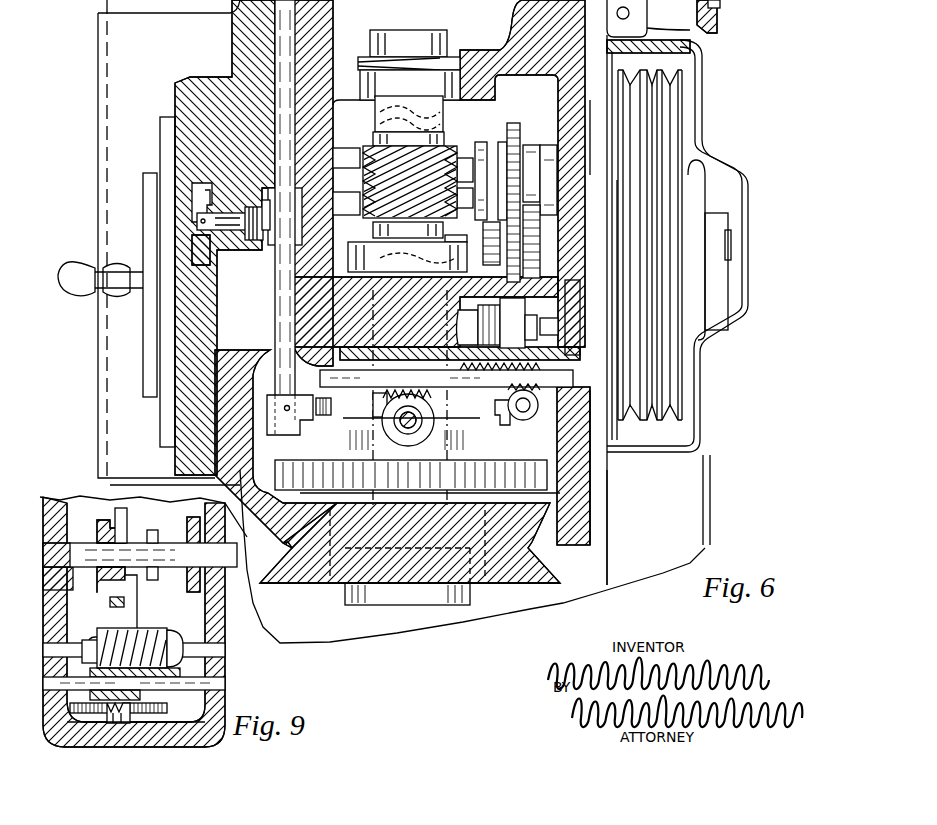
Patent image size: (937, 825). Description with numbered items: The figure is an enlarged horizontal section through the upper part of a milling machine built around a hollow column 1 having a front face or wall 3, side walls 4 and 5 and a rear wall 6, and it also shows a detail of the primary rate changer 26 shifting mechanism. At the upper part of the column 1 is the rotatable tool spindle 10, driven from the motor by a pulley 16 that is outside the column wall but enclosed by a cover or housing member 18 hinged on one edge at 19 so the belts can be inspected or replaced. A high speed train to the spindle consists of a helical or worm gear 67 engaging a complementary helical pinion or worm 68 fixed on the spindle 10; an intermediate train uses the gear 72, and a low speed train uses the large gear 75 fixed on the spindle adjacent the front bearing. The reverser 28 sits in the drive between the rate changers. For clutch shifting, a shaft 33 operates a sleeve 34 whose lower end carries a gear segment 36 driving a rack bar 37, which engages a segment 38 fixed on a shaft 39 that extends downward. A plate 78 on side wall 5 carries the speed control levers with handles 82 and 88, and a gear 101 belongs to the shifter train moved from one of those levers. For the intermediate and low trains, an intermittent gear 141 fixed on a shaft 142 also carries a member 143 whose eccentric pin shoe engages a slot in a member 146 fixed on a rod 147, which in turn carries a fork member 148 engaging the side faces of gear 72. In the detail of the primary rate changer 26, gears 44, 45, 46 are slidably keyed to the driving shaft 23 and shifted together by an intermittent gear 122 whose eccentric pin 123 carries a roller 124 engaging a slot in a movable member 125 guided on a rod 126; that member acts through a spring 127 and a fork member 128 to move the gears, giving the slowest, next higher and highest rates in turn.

In FIG. 6, the hollow column 1 is at (292, 586).
In FIG. 6, the front face or wall 3 is at (305, 568).
In FIG. 6, the side wall 4 is at (607, 462).
In FIG. 6, the side wall 5 is at (224, 83).
In FIG. 6, the rear wall 6 is at (318, 72).
In FIG. 6, the rotatable tool spindle 10 is at (470, 600).
In FIG. 6, the pulley 16 is at (684, 101).
In FIG. 6, the cover or housing member 18 is at (746, 274).
In FIG. 6, the hinge 19 is at (636, 23).
In FIG. 9, the driving shaft 23 is at (46, 568).
In FIG. 9, the first or primary rate changer 26 is at (170, 594).
In FIG. 6, the reverser 28 is at (504, 132).
In FIG. 6, the shaft 33 is at (404, 428).
In FIG. 6, the sleeve 34 is at (414, 426).
In FIG. 6, the gear segment 36 is at (430, 406).
In FIG. 6, the rack bar 37 is at (434, 375).
In FIG. 6, the segment 38 is at (505, 418).
In FIG. 6, the shaft 39 is at (523, 414).
In FIG. 9, the gear 44 is at (100, 528).
In FIG. 9, the gear 45 is at (128, 525).
In FIG. 9, the gear 46 is at (157, 533).
In FIG. 6, the helical or worm gear 67 is at (409, 88).
In FIG. 6, the helical pinion or worm 68 is at (450, 150).
In FIG. 6, the gear 72 is at (320, 418).
In FIG. 6, the gear 75 is at (411, 488).
In FIG. 6, the plate or member 78 is at (719, 22).
In FIG. 6, the handle or grip 82 is at (110, 268).
In FIG. 6, the handle 88 is at (62, 272).
In FIG. 6, the gear 101 is at (718, 8).
In FIG. 9, the intermittent gear 122 is at (165, 710).
In FIG. 9, the eccentric pin 123 is at (100, 708).
In FIG. 9, the roller 124 is at (130, 712).
In FIG. 9, the movable member 125 is at (90, 705).
In FIG. 9, the rod 126 is at (226, 684).
In FIG. 9, the spring 127 is at (142, 632).
In FIG. 9, the fork member 128 is at (105, 610).
In FIG. 6, the intermittent gear 141 is at (203, 193).
In FIG. 6, the shaft 142 is at (232, 210).
In FIG. 6, the member 143 is at (254, 242).
In FIG. 6, the member 146 is at (278, 246).
In FIG. 6, the rod 147 is at (276, 312).
In FIG. 6, the fork member 148 is at (268, 432).